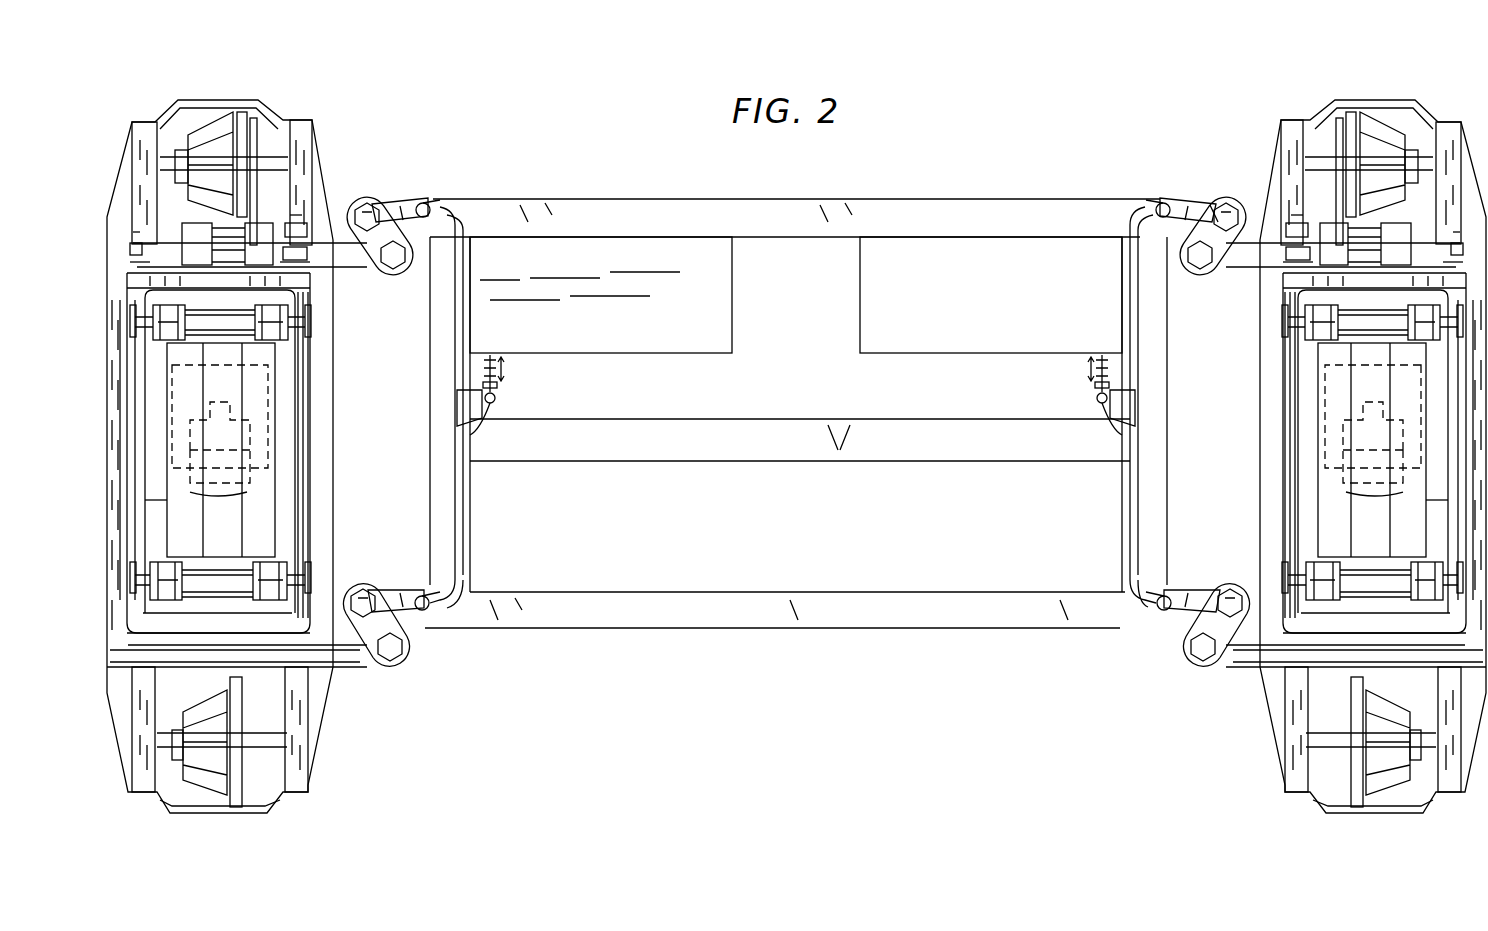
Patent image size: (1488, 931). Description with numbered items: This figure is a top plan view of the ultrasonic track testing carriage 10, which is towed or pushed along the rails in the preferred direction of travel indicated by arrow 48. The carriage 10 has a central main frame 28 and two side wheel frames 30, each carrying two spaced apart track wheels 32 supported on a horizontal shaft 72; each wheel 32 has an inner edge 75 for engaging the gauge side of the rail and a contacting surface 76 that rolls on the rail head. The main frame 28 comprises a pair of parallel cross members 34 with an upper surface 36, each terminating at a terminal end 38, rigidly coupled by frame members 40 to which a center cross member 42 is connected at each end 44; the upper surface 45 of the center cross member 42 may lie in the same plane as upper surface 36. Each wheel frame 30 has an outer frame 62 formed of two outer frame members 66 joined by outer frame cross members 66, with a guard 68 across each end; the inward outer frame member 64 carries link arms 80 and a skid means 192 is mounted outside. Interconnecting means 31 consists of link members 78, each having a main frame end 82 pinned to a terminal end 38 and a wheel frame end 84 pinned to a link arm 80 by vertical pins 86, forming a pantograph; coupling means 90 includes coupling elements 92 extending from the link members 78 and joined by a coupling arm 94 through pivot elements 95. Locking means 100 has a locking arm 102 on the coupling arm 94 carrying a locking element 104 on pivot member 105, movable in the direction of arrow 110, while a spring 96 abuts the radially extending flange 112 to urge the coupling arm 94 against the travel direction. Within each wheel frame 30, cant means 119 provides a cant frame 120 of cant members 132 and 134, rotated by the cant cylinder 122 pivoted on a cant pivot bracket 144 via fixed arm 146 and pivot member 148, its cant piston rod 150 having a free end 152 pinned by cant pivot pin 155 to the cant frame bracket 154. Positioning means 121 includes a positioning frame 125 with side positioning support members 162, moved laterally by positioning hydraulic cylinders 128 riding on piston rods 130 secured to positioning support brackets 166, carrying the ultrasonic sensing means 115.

The carriage 10 is at (925, 205).
The main frame 28 is at (855, 632).
The wheel frame 30 is at (352, 712).
The interconnecting means 31 is at (402, 212).
The track wheel 32 is at (205, 120).
The cross member 34 is at (645, 212).
The upper surface 36 is at (875, 215).
The terminal end 38 is at (395, 205).
The frame member 40 is at (432, 492).
The center cross member 42 is at (930, 470).
The end 44 is at (502, 475).
The upper surface 45 is at (875, 425).
The arrow 48 is at (1450, 445).
The outer frame 62 is at (345, 110).
The outer frame member 64 is at (312, 472).
The outer frame cross member 66 is at (160, 240).
The guard 68 is at (230, 100).
The shaft 72 is at (265, 750).
The inner edge 75 is at (255, 140).
The contacting surface 76 is at (215, 135).
The link member 78 is at (360, 243).
The link arm 80 is at (378, 268).
The main frame end 82 is at (365, 210).
The wheel frame end 84 is at (398, 265).
The pin 86 is at (375, 195).
The coupling means 90 is at (452, 340).
The coupling element 92 is at (425, 205).
The coupling arm 94 is at (455, 515).
The pivot element 95 is at (430, 205).
The spring 96 is at (502, 340).
The locking means 100 is at (480, 370).
The locking arm 102 is at (495, 405).
The locking element 104 is at (480, 425).
The pivot member 105 is at (497, 400).
The double-headed arrow 110 is at (505, 373).
The radially extending flange 112 is at (498, 386).
The ultrasonic sensing means 115 is at (190, 495).
The cant means 119 is at (128, 395).
The cant frame 120 is at (128, 448).
The positioning means 121 is at (282, 345).
The cant cylinder 122 is at (195, 228).
The positioning frame 125 is at (150, 528).
The positioning hydraulic cylinder 128 is at (290, 340).
The piston rod 130 is at (300, 320).
The cant member 132 is at (140, 490).
The cant member 134 is at (255, 278).
The cant pivot bracket 144 is at (300, 222).
The fixed arm 146 is at (300, 258).
The pivot member 148 is at (300, 265).
The cant piston rod 150 is at (135, 243).
The free end 152 is at (132, 252).
The cant frame bracket 154 is at (140, 268).
The cant pivot pin 155 is at (1455, 272).
The positioning support member 162 is at (220, 505).
The positioning support bracket 166 is at (308, 578).
The skid means 192 is at (150, 655).